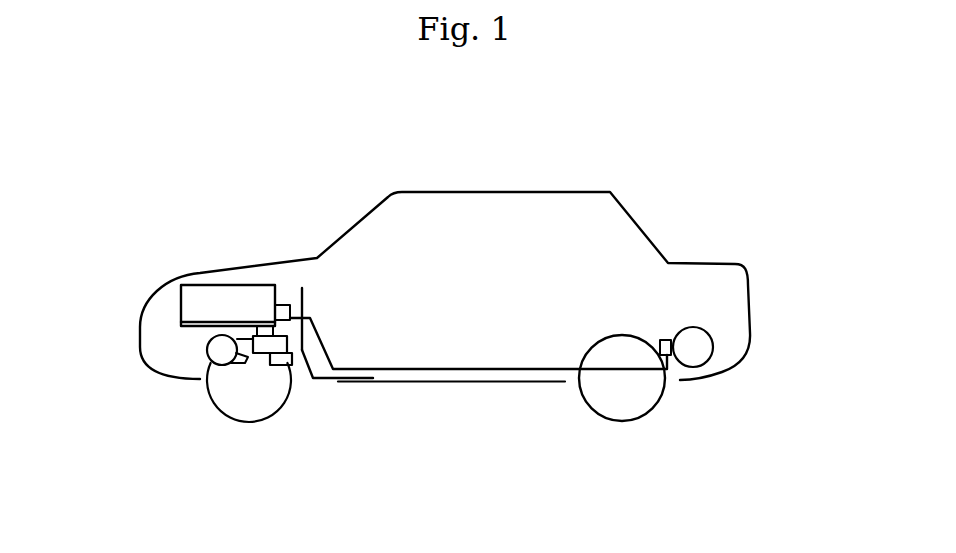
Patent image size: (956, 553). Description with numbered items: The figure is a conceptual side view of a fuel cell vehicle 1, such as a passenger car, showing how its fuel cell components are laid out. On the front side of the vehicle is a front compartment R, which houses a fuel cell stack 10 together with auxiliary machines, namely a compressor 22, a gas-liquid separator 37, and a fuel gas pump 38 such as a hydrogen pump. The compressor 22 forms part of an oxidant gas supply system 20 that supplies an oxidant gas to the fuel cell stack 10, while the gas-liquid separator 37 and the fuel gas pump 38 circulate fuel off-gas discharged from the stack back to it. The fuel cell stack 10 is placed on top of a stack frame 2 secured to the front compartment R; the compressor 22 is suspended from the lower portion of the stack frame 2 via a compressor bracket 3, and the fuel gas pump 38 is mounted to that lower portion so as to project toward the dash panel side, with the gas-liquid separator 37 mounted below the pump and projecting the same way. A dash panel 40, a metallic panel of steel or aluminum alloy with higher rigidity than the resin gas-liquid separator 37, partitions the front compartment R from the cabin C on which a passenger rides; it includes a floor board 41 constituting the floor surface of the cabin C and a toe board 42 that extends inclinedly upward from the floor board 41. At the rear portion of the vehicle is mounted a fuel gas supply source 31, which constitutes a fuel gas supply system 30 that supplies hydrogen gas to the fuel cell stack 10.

The fuel cell vehicle 1 is at (457, 163).
The front compartment R is at (165, 327).
The cabin C is at (456, 283).
The stack frame 2 is at (187, 327).
The compressor bracket 3 is at (259, 334).
The fuel cell stack 10 is at (252, 288).
The oxidant gas supply system 20 is at (205, 344).
The compressor 22 is at (228, 352).
The fuel gas supply system 30 is at (493, 362).
The fuel gas supply source 31 is at (697, 334).
The gas-liquid separator 37 is at (287, 358).
The fuel gas pump 38 is at (264, 347).
The dash panel 40 is at (307, 294).
The floor board 41 is at (351, 378).
The toe board 42 is at (312, 364).